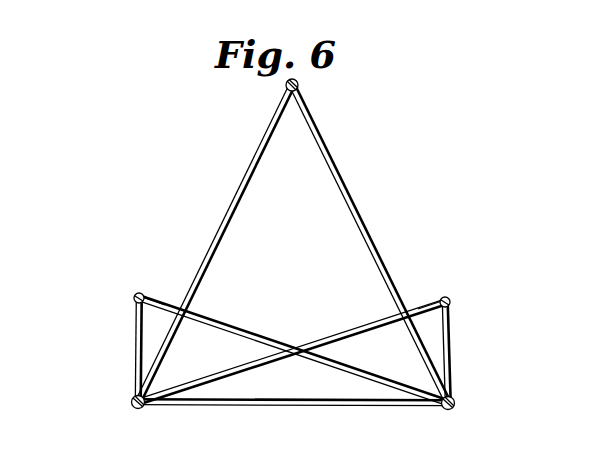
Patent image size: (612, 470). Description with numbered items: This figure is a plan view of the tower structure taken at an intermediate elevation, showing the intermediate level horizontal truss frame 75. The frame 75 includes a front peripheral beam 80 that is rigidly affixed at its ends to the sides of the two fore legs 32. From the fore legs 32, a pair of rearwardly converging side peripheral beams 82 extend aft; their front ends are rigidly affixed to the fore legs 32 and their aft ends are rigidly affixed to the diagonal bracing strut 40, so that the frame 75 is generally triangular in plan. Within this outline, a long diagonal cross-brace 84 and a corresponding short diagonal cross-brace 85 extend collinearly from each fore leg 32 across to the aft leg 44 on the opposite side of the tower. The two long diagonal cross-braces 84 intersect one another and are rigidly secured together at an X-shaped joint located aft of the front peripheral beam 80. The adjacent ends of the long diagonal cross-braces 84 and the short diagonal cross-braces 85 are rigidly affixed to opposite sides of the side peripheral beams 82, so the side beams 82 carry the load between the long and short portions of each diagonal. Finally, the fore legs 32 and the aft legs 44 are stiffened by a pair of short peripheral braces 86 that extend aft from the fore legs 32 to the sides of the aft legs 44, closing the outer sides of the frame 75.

The diagonal bracing strut 40 is at (300, 82).
The intermediate level horizontal truss frame 75 is at (355, 173).
The side peripheral beams 82 is at (253, 167).
The short diagonal cross-braces 85 is at (158, 303).
The aft leg 44 is at (135, 298).
The short peripheral braces 86 is at (135, 352).
The long diagonal cross-braces 84 is at (257, 332).
The front peripheral beam 80 is at (320, 406).
The fore legs 32 is at (138, 409).